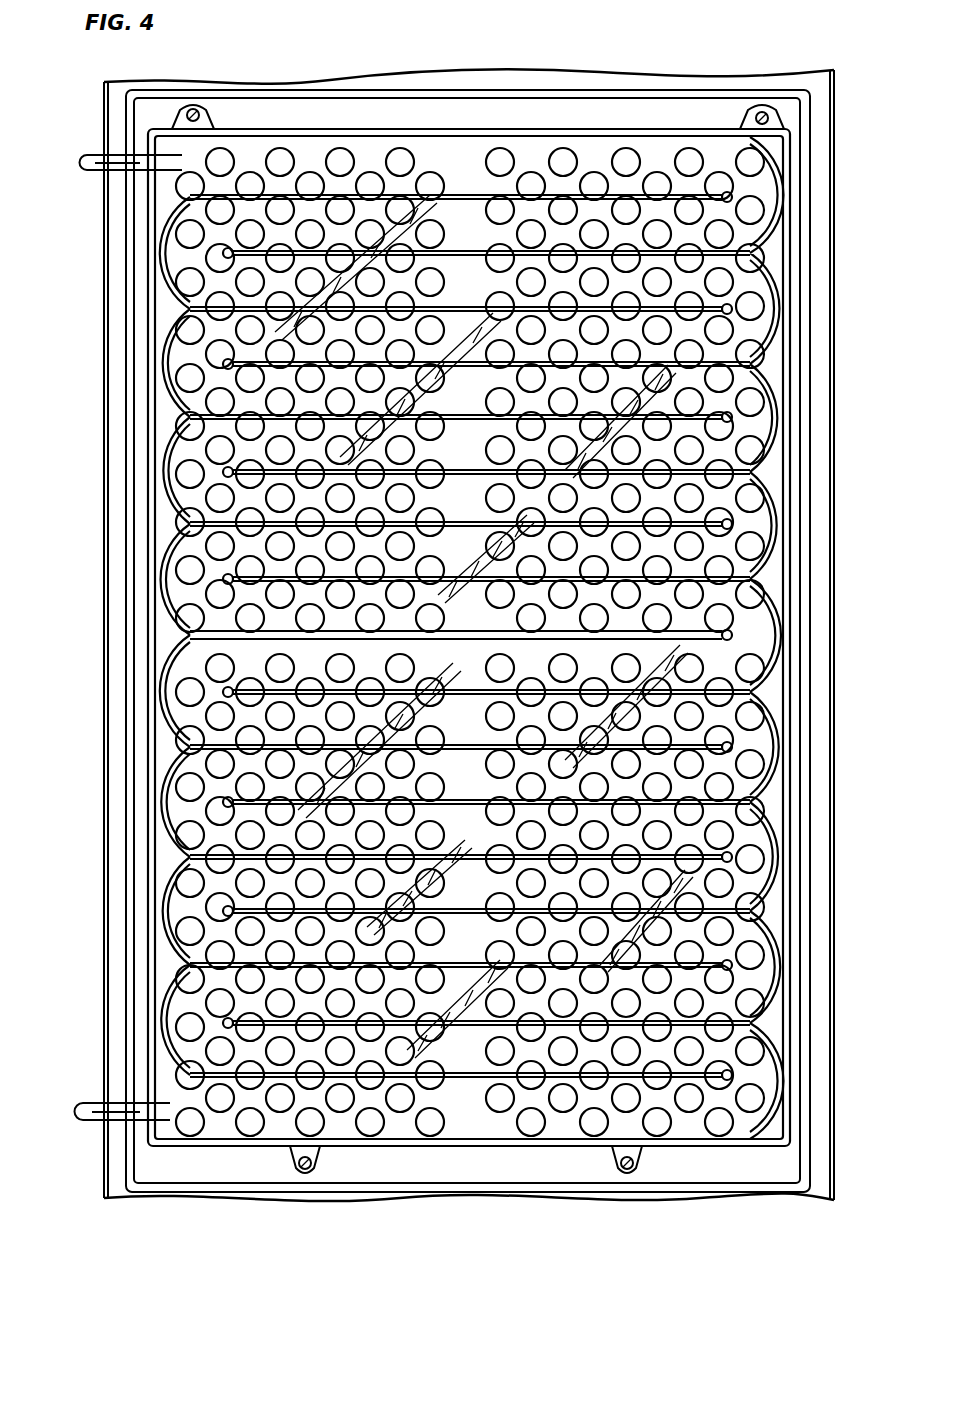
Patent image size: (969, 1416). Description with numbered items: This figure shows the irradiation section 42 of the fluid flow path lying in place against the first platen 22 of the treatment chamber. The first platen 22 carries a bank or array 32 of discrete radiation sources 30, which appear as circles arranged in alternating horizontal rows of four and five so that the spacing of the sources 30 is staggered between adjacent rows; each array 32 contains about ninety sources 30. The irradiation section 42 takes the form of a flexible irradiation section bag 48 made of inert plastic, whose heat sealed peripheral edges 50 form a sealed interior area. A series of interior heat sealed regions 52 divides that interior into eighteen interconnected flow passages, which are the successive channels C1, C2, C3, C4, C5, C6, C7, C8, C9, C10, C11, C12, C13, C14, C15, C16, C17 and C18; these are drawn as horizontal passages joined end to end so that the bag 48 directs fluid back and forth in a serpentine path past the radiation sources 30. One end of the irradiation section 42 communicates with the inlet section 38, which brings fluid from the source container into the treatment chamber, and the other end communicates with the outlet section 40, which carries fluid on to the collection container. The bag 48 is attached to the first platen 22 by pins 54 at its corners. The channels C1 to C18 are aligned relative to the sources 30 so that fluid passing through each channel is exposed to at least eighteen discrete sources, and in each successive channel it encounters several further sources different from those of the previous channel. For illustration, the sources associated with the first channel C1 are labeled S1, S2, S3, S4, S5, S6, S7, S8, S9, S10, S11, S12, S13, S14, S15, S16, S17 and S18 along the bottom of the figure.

The first platen 22 is at (705, 122).
The discrete radiation sources 30 is at (475, 649).
The bank or array 32 is at (655, 145).
The inlet section 38 is at (92, 1130).
The outlet section 40 is at (91, 137).
The irradiation section 42 is at (482, 1150).
The irradiation section bag 48 is at (180, 738).
The heat sealed peripheral edges 50 is at (180, 205).
The interior heat sealed regions 52 is at (470, 300).
The pins 54 is at (193, 108).
The first channel C1 is at (735, 1105).
The second channel C2 is at (740, 1049).
The third channel C3 is at (745, 994).
The fourth channel C4 is at (745, 938).
The fifth channel C5 is at (745, 884).
The sixth channel C6 is at (745, 830).
The seventh channel C7 is at (745, 775).
The eighth channel C8 is at (745, 720).
The ninth channel C9 is at (745, 664).
The tenth channel C10 is at (745, 607).
The eleventh channel C11 is at (745, 552).
The twelfth channel C12 is at (745, 498).
The thirteenth channel C13 is at (745, 444).
The fourteenth channel C14 is at (745, 390).
The fifteenth channel C15 is at (745, 337).
The sixteenth channel C16 is at (745, 281).
The seventeenth channel C17 is at (745, 225).
The eighteenth channel C18 is at (745, 167).
The radiation source S1 is at (192, 1118).
The radiation source S2 is at (222, 1093).
The radiation source S3 is at (250, 1118).
The radiation source S4 is at (280, 1093).
The radiation source S5 is at (310, 1118).
The radiation source S6 is at (340, 1093).
The radiation source S7 is at (370, 1118).
The radiation source S8 is at (400, 1093).
The radiation source S9 is at (432, 1118).
The radiation source S10 is at (502, 1093).
The radiation source S11 is at (531, 1118).
The radiation source S12 is at (564, 1093).
The radiation source S13 is at (594, 1118).
The radiation source S14 is at (627, 1093).
The radiation source S15 is at (657, 1118).
The radiation source S16 is at (690, 1093).
The radiation source S17 is at (720, 1118).
The radiation source S18 is at (765, 1095).